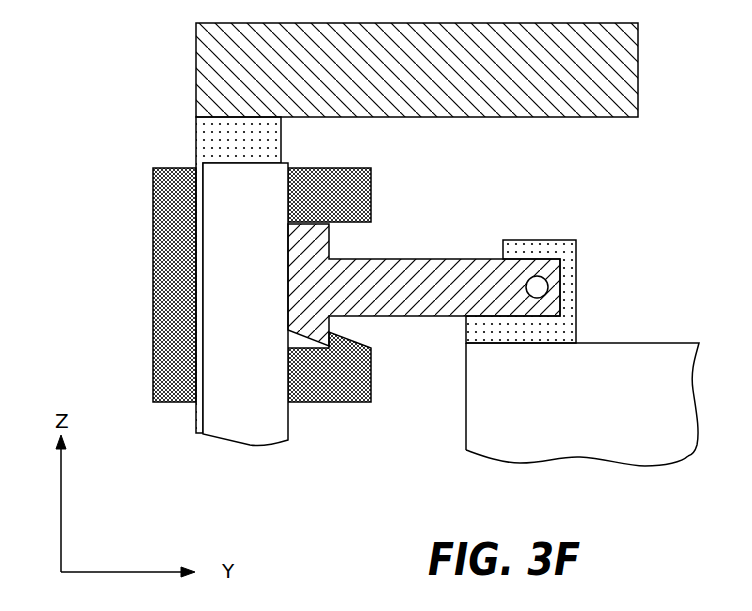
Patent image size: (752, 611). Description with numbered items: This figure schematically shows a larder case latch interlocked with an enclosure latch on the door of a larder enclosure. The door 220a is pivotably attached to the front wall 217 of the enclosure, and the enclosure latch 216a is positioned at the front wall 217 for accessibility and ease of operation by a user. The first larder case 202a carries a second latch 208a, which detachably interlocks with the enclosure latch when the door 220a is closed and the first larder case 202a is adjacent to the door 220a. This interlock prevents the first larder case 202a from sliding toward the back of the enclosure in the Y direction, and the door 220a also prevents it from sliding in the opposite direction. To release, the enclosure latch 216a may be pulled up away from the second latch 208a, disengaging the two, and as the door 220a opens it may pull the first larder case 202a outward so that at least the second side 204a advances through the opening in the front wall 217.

The front wall 217 is at (198, 125).
The enclosure latch 216a is at (155, 268).
The door 220a is at (265, 320).
The second latch 208a is at (458, 259).
The first larder case 202a is at (673, 350).
The second side 204a is at (455, 449).